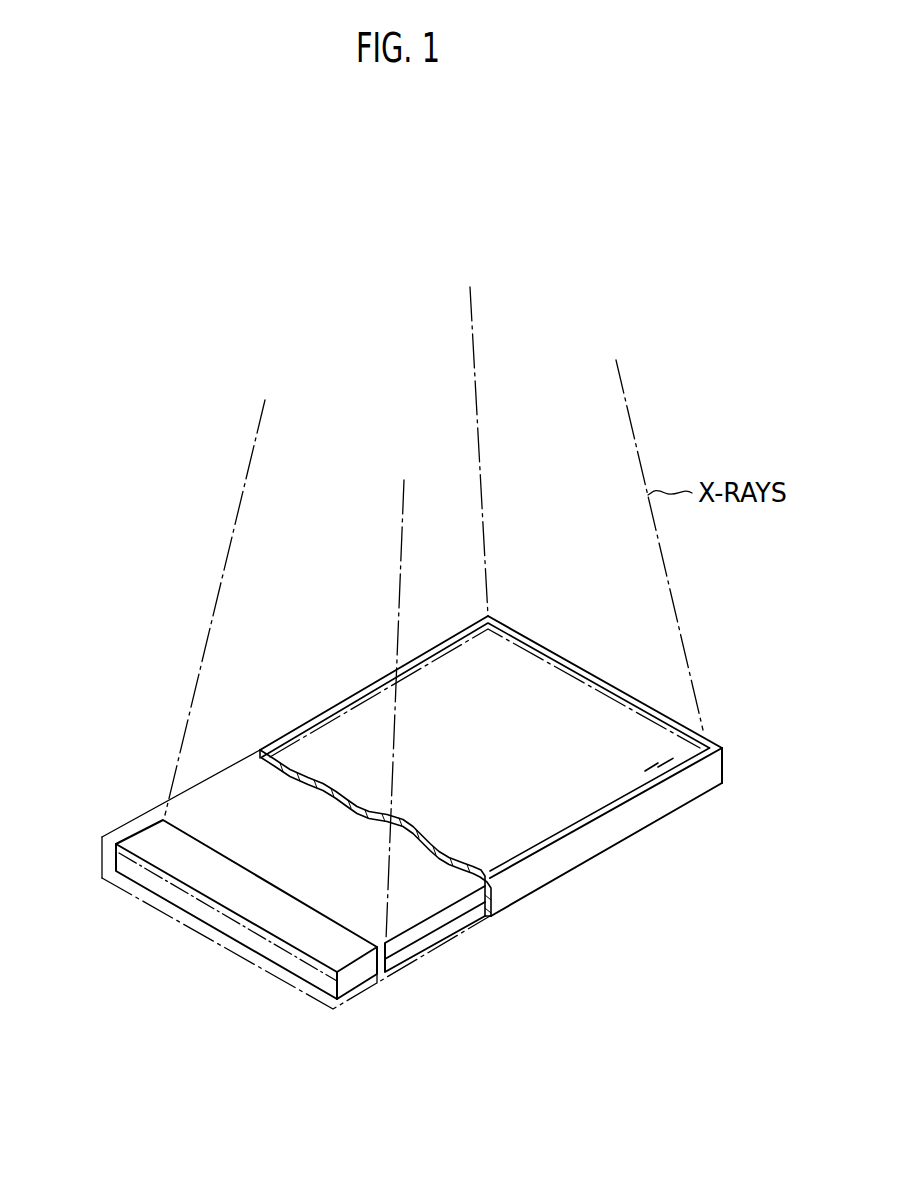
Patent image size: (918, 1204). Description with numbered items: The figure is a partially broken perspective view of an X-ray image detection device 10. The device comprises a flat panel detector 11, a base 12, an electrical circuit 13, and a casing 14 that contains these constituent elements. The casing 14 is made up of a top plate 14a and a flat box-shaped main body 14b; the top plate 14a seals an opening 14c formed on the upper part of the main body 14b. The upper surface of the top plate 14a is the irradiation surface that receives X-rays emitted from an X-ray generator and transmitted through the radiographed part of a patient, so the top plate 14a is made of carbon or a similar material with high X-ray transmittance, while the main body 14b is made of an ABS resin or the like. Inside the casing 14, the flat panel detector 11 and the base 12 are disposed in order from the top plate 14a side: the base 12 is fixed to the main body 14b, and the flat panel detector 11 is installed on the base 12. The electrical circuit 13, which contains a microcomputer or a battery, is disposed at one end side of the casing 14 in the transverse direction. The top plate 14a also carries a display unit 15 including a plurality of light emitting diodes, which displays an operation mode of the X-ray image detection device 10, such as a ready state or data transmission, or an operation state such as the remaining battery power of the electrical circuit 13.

The X-ray image detection device 10 is at (600, 666).
The flat panel detector 11 is at (450, 917).
The base 12 is at (417, 950).
The electrical circuit 13 is at (357, 973).
The casing 14 is at (650, 822).
The top plate 14a is at (344, 733).
The main body 14b is at (606, 843).
The opening 14c is at (535, 830).
The display unit 15 is at (683, 752).